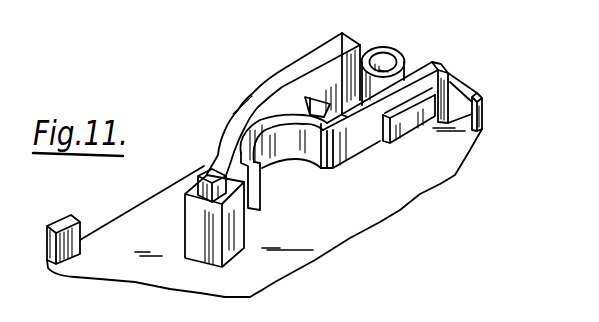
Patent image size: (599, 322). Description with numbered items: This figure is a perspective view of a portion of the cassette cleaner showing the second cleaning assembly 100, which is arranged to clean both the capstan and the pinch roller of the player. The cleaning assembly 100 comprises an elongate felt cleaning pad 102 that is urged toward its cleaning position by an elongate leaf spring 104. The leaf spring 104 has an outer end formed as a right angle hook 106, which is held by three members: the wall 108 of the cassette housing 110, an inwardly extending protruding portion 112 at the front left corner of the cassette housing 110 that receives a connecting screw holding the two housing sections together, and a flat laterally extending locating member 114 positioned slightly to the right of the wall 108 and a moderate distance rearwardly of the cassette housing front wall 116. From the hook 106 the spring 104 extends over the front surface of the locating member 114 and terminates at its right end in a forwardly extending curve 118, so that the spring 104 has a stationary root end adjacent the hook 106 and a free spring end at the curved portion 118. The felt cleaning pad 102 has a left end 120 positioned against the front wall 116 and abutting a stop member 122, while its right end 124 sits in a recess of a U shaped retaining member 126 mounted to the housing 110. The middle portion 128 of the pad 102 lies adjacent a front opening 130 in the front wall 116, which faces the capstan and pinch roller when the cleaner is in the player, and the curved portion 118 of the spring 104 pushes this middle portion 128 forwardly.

The second cleaning assembly 100 is at (312, 38).
The elongate felt cleaning pad 102 is at (242, 102).
The elongate leaf spring 104 is at (352, 140).
The right angle hook 106 is at (450, 62).
The wall of the cassette housing 108 is at (468, 88).
The cassette housing 110 is at (120, 268).
The protruding portion 112 is at (380, 73).
The locating member 114 is at (405, 125).
The cassette housing front wall 116 is at (360, 55).
The forwardly extending curve 118 is at (292, 153).
The left end of the pad 120 is at (278, 72).
The stop member 122 is at (319, 99).
The right end of the pad 124 is at (213, 165).
The U shaped retaining member 126 is at (235, 227).
The middle portion of the pad 128 is at (240, 115).
The front opening 130 is at (165, 192).